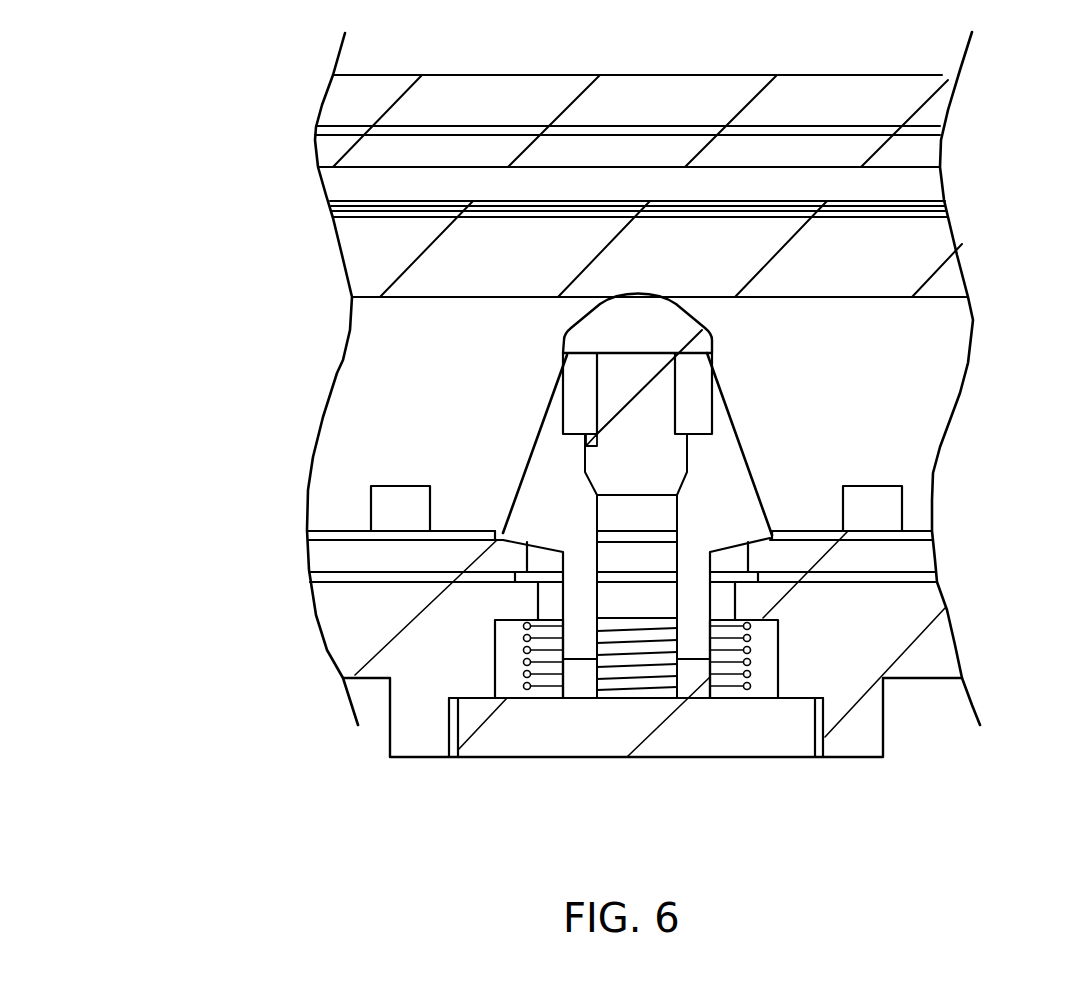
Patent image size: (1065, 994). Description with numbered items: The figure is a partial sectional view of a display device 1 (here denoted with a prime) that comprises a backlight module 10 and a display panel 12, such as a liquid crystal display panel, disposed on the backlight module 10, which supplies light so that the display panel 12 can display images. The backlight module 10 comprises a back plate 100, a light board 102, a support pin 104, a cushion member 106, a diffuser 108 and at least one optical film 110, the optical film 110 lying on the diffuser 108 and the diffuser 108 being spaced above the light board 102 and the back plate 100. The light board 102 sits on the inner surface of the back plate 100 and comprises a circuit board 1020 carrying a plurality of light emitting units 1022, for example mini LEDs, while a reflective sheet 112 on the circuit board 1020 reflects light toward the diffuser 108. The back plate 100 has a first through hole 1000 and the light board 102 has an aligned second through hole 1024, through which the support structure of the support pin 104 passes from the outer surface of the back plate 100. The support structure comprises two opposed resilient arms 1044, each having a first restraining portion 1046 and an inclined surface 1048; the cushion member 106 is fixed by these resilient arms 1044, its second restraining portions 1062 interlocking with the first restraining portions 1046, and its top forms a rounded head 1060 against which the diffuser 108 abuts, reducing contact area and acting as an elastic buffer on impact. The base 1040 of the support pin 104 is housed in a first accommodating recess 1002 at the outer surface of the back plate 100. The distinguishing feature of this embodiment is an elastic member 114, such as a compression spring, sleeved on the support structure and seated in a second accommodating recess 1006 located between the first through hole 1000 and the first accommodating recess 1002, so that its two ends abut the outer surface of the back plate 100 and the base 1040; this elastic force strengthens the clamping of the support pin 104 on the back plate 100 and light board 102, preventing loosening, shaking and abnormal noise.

The display device 1 is at (172, 135).
The backlight module 10 is at (418, 764).
The display panel 12 is at (830, 75).
The back plate 100 is at (652, 728).
The light board 102 is at (563, 535).
The support pin 104 is at (641, 444).
The cushion member 106 is at (637, 380).
The diffuser 108 is at (405, 299).
The optical film 110 is at (425, 200).
The reflective sheet 112 is at (915, 530).
The elastic member 114 is at (642, 690).
The first through hole 1000 is at (748, 598).
The first accommodating recess 1002 is at (826, 750).
The second accommodating recess 1006 is at (784, 655).
The circuit board 1020 is at (360, 556).
The light emitting unit 1022 is at (400, 486).
The second through hole 1024 is at (760, 549).
The base 1040 is at (587, 758).
The resilient arm 1044 is at (545, 418).
The first restraining portion 1046 is at (573, 430).
The inclined surface 1048 is at (548, 552).
The rounded head 1060 is at (580, 322).
The second restraining portion 1062 is at (587, 447).